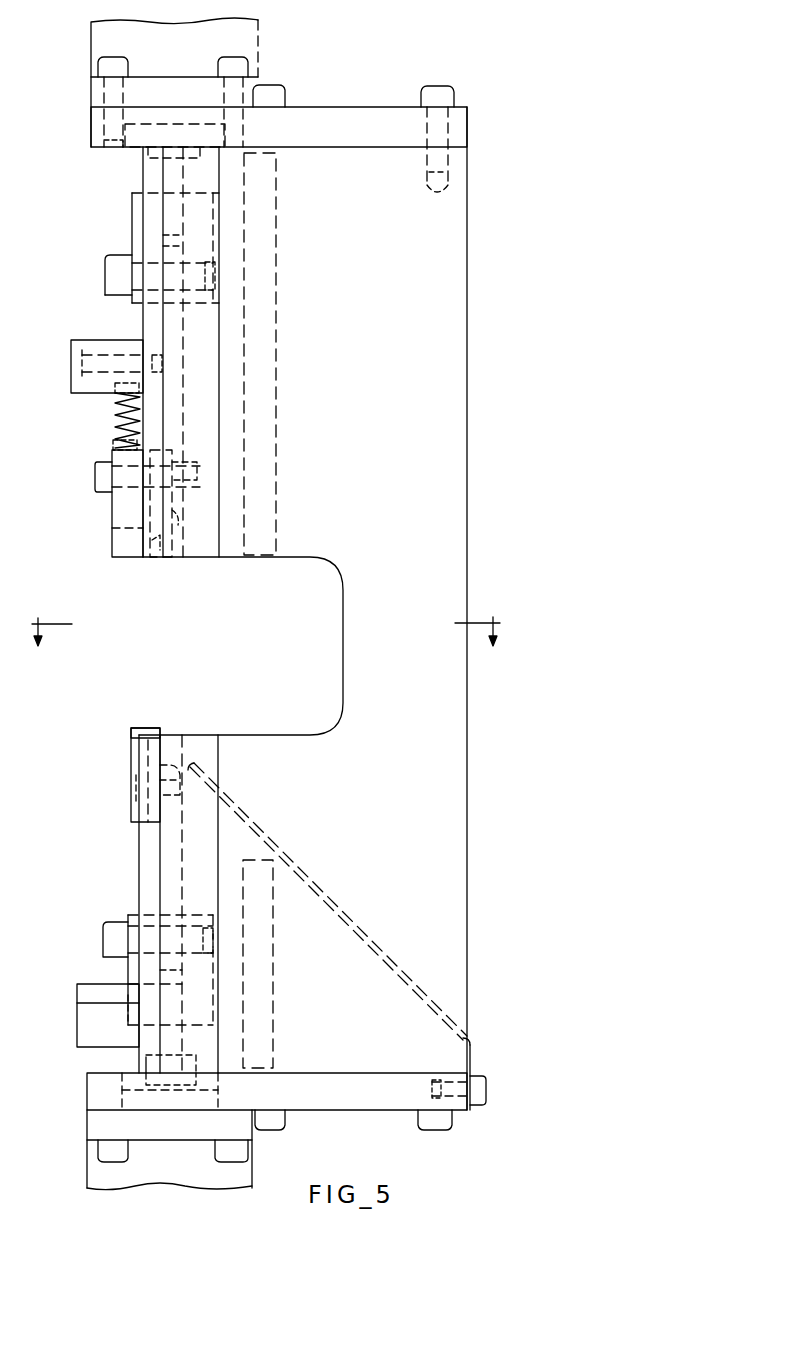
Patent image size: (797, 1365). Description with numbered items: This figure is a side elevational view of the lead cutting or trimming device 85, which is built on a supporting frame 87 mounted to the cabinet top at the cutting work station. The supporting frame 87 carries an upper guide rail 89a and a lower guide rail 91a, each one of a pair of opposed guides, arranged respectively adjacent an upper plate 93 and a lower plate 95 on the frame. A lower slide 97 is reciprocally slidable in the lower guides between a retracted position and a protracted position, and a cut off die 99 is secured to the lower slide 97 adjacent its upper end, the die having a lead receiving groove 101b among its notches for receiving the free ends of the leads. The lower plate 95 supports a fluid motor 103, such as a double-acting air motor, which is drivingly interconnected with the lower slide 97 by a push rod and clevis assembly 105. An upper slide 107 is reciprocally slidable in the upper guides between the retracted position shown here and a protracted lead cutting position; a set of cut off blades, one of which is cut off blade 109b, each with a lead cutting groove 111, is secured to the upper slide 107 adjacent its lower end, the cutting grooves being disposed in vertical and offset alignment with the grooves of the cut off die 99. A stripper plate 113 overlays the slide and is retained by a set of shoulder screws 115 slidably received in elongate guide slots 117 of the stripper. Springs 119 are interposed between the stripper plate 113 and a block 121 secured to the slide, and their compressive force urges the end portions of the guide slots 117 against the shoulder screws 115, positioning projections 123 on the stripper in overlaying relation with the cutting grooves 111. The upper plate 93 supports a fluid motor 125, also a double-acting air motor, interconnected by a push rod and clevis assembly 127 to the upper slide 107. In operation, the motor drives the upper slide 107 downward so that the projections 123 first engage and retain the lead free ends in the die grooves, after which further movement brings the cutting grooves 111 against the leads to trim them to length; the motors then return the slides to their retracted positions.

The lead cutting device 85 is at (497, 450).
The supporting frame 87 is at (458, 291).
The upper guide rail 89a is at (150, 183).
The lower guide rail 91a is at (139, 1057).
The upper plate 93 is at (343, 110).
The lower plate 95 is at (335, 1110).
The lower slide 97 is at (182, 866).
The cut off die 99 is at (131, 768).
The lead receiving groove 101b is at (136, 733).
The fluid motor 103 is at (190, 1181).
The push rod and clevis assembly 105 is at (128, 964).
The upper slide 107 is at (184, 340).
The cut off blade 109b is at (177, 560).
The lead cutting groove 111 is at (152, 560).
The stripper plate 113 is at (112, 540).
The shoulder screw 115 is at (95, 480).
The elongate guide slot 117 is at (126, 524).
The spring 119 is at (115, 416).
The block 121 is at (71, 382).
The projection 123 is at (120, 558).
The fluid motor 125 is at (253, 37).
The push rod and clevis assembly 127 is at (132, 226).